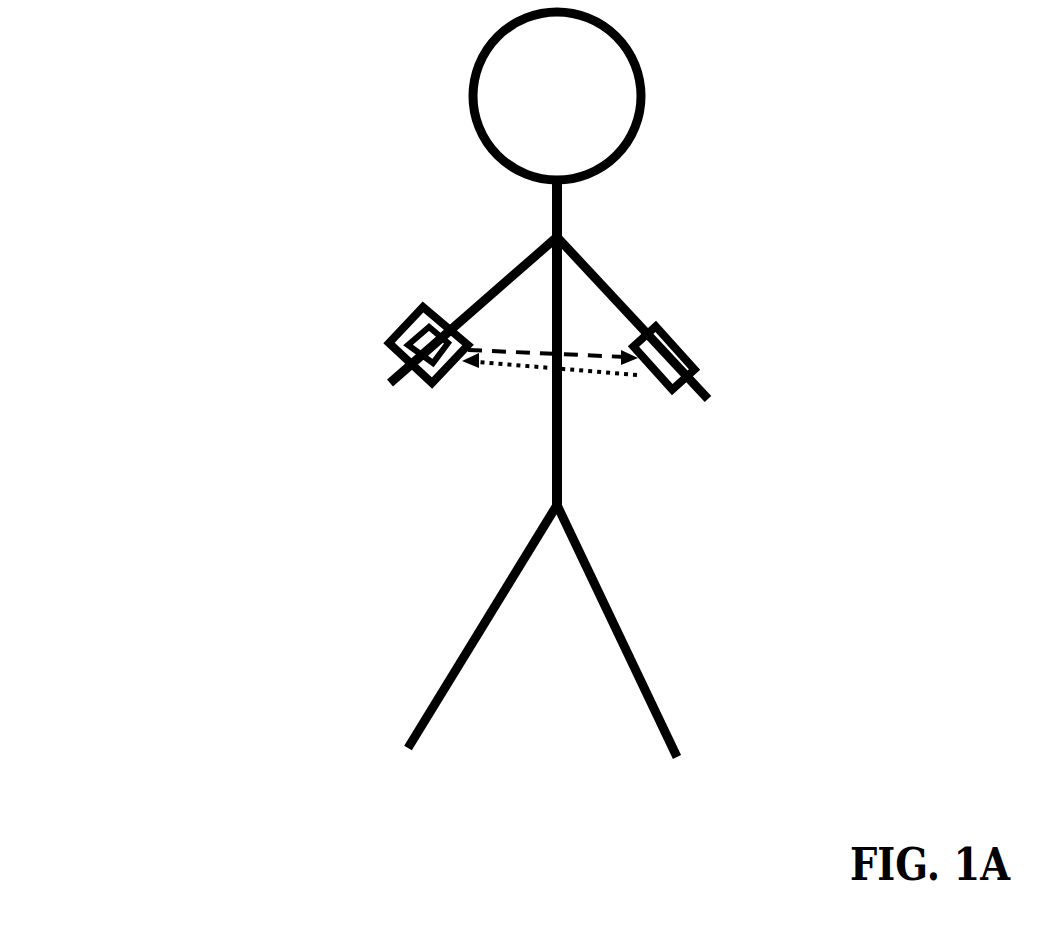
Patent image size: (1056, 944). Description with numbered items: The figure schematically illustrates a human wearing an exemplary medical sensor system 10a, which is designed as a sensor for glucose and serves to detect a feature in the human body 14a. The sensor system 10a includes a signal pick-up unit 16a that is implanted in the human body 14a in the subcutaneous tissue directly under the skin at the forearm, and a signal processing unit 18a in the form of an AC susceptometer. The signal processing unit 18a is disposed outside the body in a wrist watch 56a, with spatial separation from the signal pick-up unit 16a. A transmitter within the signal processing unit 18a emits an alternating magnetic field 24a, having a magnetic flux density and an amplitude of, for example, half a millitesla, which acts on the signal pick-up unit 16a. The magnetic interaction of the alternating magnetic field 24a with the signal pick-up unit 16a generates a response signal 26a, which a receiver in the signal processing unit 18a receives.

The medical sensor system 10a is at (504, 384).
The human body 14a is at (562, 410).
The signal pick-up unit 16a is at (681, 343).
The signal processing unit 18a is at (336, 253).
The wrist watch 56a is at (412, 323).
The alternating magnetic field 24a is at (497, 347).
The response signal 26a is at (515, 372).